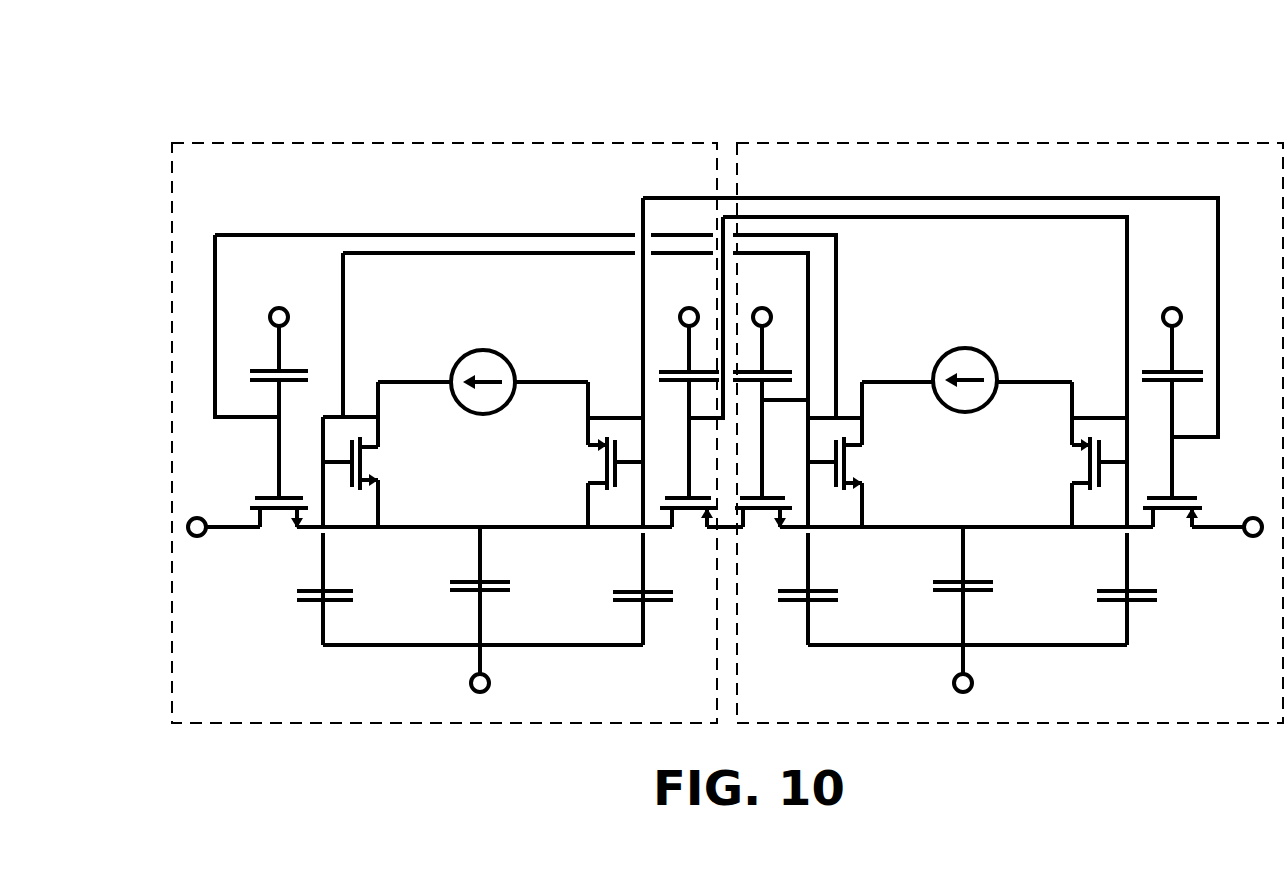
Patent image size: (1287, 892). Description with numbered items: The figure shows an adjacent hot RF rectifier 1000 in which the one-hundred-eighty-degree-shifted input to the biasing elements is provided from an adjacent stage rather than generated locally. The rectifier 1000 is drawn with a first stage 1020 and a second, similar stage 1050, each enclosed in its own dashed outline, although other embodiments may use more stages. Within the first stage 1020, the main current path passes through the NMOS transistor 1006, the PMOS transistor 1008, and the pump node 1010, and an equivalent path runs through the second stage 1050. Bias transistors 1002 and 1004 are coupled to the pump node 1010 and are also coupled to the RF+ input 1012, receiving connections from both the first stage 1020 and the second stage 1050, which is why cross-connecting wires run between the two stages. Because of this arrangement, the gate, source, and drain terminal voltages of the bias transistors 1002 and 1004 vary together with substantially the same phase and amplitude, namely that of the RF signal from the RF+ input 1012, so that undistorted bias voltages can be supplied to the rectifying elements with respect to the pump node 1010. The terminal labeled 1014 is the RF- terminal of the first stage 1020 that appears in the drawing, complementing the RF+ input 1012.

The adjacent hot RF rectifier 1000 is at (213, 105).
The first stage 1020 is at (254, 176).
The second stage 1050 is at (816, 176).
The bias transistor 1002 is at (379, 462).
The bias transistor 1004 is at (586, 462).
The NMOS transistor 1006 is at (277, 532).
The PMOS transistor 1008 is at (690, 529).
The pump node 1010 is at (455, 534).
The RF+ input 1012 is at (555, 680).
The RF- terminal 1014 is at (305, 271).